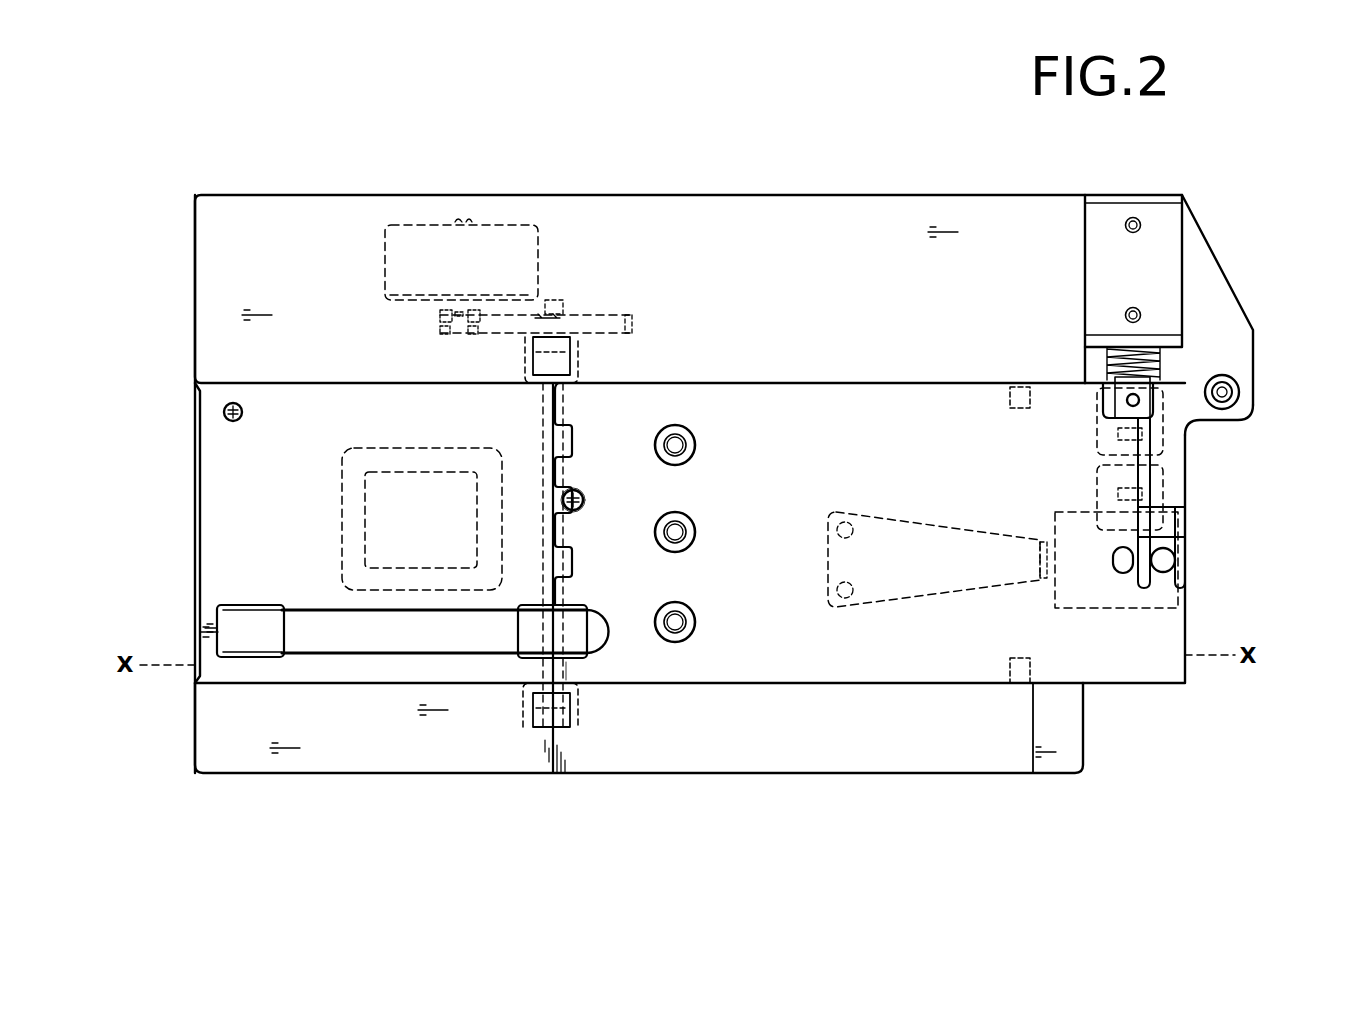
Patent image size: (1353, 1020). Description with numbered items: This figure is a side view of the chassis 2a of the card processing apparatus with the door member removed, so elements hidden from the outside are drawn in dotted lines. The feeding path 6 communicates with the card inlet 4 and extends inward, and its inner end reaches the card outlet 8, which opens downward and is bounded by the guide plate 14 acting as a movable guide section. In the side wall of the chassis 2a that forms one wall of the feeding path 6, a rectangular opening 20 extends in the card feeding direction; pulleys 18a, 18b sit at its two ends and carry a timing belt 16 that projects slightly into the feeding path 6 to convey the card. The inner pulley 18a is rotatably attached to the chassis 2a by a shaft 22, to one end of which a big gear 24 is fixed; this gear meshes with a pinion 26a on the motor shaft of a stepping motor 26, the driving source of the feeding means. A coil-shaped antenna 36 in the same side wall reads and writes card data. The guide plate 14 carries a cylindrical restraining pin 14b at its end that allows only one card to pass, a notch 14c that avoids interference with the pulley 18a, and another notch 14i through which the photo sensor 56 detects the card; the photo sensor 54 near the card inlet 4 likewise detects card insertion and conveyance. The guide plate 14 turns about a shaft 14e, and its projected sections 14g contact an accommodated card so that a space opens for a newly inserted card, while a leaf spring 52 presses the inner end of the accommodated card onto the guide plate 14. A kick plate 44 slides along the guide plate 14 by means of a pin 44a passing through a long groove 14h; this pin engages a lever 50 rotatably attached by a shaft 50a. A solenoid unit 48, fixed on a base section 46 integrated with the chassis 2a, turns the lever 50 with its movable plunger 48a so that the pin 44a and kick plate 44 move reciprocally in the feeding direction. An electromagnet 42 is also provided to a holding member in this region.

The chassis 2a is at (258, 132).
The card inlet 4 is at (200, 572).
The feeding path 6 is at (335, 425).
The card outlet 8 is at (822, 686).
The guide plate 14 is at (822, 425).
The restraining pin 14b is at (575, 670).
The notch 14c is at (612, 640).
The shaft 14e is at (1020, 395).
The projected sections 14g is at (690, 612).
The long groove 14h is at (1135, 590).
The notch 14i is at (578, 510).
The timing belt 16 is at (385, 631).
The pulley 18a is at (525, 656).
The pulley 18b is at (260, 656).
The rectangular opening 20 is at (315, 611).
The shaft 22 is at (545, 437).
The big gear 24 is at (610, 320).
The stepping motor 26 is at (507, 250).
The pinion 26a is at (440, 322).
The coil-shaped antenna 36 is at (355, 490).
The electromagnet 42 is at (1105, 495).
The kick plate 44 is at (1100, 612).
The pin 44a is at (1165, 560).
The base section 46 is at (1205, 268).
The solenoid unit 48 is at (1150, 235).
The movable plunger 48a is at (1140, 400).
The lever 50 is at (1190, 415).
The shaft 50a is at (1225, 393).
The leaf spring 52 is at (925, 525).
The photo sensor 54 is at (226, 409).
The photo sensor 56 is at (580, 497).